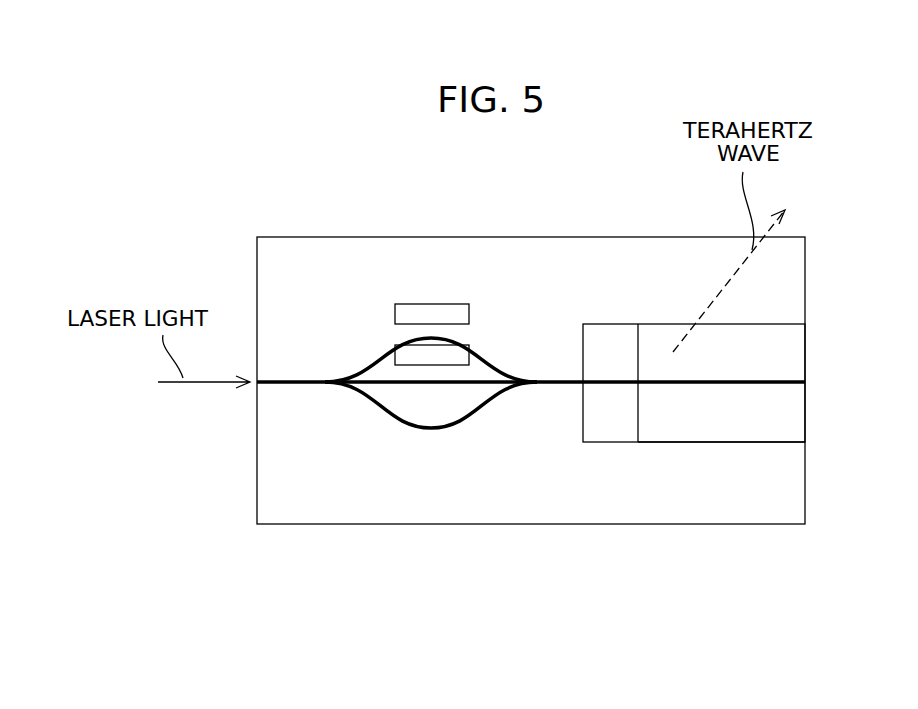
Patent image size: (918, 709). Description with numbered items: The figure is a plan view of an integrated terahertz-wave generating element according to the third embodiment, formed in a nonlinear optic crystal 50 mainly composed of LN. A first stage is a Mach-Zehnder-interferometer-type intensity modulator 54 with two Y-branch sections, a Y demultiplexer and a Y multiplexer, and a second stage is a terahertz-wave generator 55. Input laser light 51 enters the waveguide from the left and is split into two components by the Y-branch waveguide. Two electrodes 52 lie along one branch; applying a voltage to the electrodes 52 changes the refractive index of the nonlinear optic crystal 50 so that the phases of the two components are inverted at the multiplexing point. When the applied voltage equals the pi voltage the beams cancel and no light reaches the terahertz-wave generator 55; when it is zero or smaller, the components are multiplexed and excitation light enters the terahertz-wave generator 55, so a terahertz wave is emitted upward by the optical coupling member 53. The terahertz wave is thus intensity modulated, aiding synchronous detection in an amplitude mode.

The nonlinear optic crystal 50 is at (550, 495).
The laser light 51 is at (298, 378).
The electrodes 52 is at (452, 357).
The optical coupling member 53 is at (613, 347).
The Mach-Zehnder-interferometer-type intensity modulator 54 is at (415, 437).
The terahertz-wave generator 55 is at (733, 452).